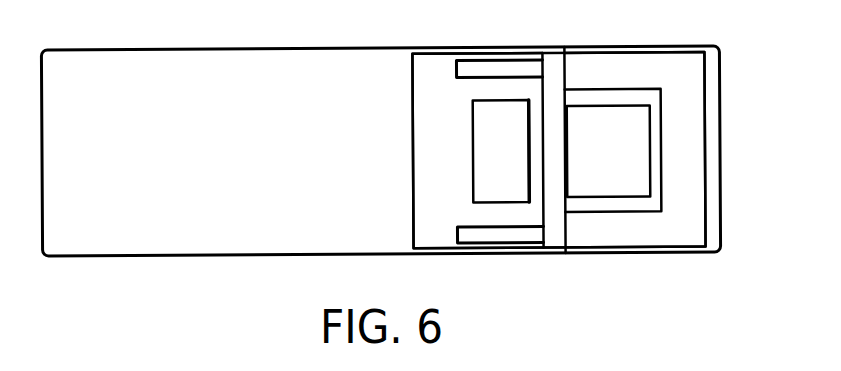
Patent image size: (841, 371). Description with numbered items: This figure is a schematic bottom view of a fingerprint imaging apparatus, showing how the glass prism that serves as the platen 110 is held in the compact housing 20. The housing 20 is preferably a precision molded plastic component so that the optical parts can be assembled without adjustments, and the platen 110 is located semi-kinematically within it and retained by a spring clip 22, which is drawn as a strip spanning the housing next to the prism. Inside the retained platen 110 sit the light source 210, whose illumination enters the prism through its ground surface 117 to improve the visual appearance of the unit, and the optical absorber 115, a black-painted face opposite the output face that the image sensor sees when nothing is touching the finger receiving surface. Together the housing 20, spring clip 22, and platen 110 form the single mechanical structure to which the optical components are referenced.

The housing 20 is at (385, 47).
The platen 110 is at (683, 48).
The ground surface 117 is at (437, 240).
The spring clip 22 is at (553, 245).
The optical absorber 115 is at (695, 155).
The light source 210 is at (472, 150).